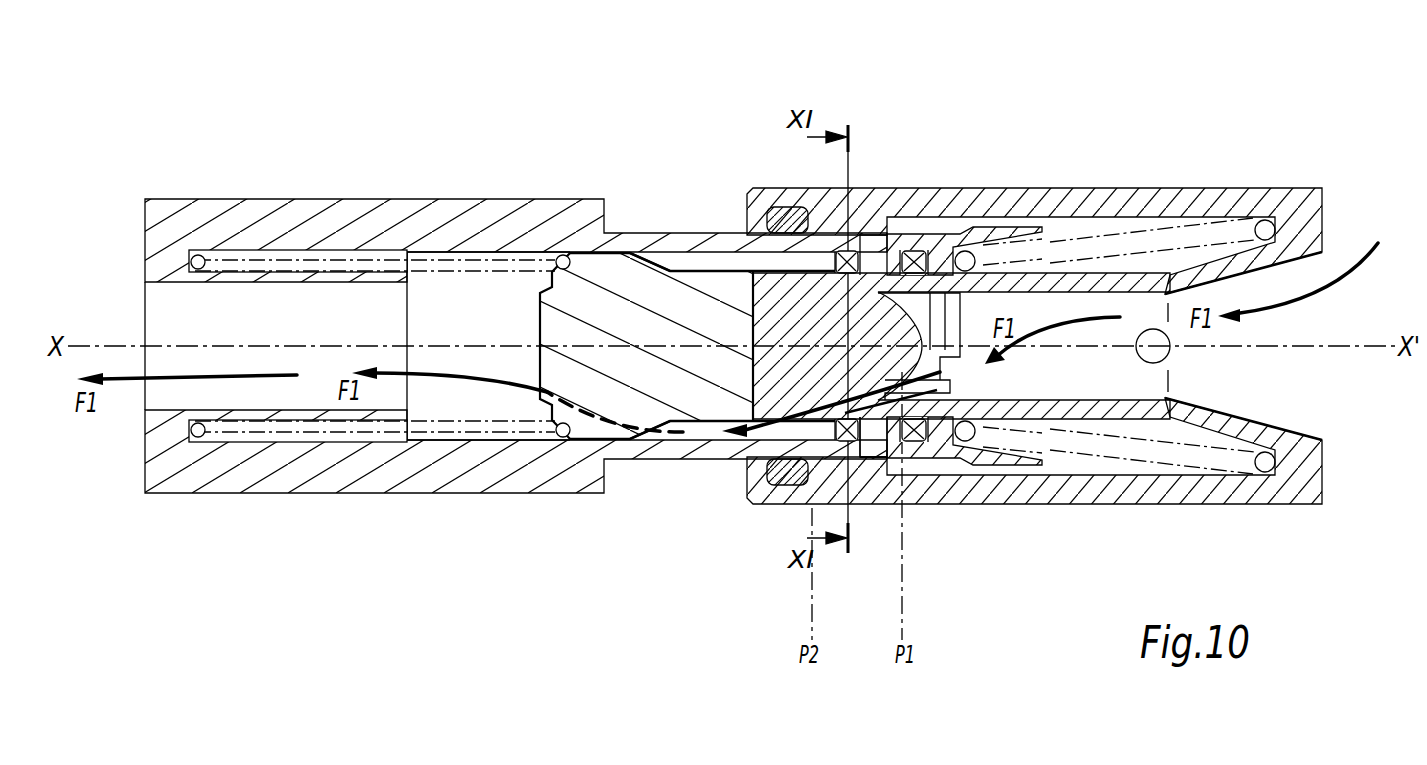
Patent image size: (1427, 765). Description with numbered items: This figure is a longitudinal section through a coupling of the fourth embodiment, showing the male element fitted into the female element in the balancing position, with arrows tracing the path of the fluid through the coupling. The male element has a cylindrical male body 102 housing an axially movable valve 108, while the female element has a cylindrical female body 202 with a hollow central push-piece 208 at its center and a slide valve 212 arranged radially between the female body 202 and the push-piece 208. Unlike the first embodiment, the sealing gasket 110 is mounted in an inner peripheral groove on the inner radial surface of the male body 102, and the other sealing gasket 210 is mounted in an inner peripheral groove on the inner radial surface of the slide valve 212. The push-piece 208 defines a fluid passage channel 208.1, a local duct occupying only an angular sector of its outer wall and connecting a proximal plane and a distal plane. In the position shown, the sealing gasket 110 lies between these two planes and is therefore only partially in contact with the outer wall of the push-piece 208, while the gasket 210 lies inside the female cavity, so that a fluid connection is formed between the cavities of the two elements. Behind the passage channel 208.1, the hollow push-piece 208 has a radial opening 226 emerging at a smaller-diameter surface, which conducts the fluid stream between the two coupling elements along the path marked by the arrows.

The male body 102 is at (358, 228).
The valve 108 is at (688, 372).
The sealing gasket 110 is at (838, 258).
The female body 202 is at (990, 200).
The push-piece 208 is at (797, 313).
The fluid passage channel 208.1 is at (880, 420).
The sealing gasket 210 is at (918, 438).
The slide valve 212 is at (912, 252).
The radial opening 226 is at (982, 368).